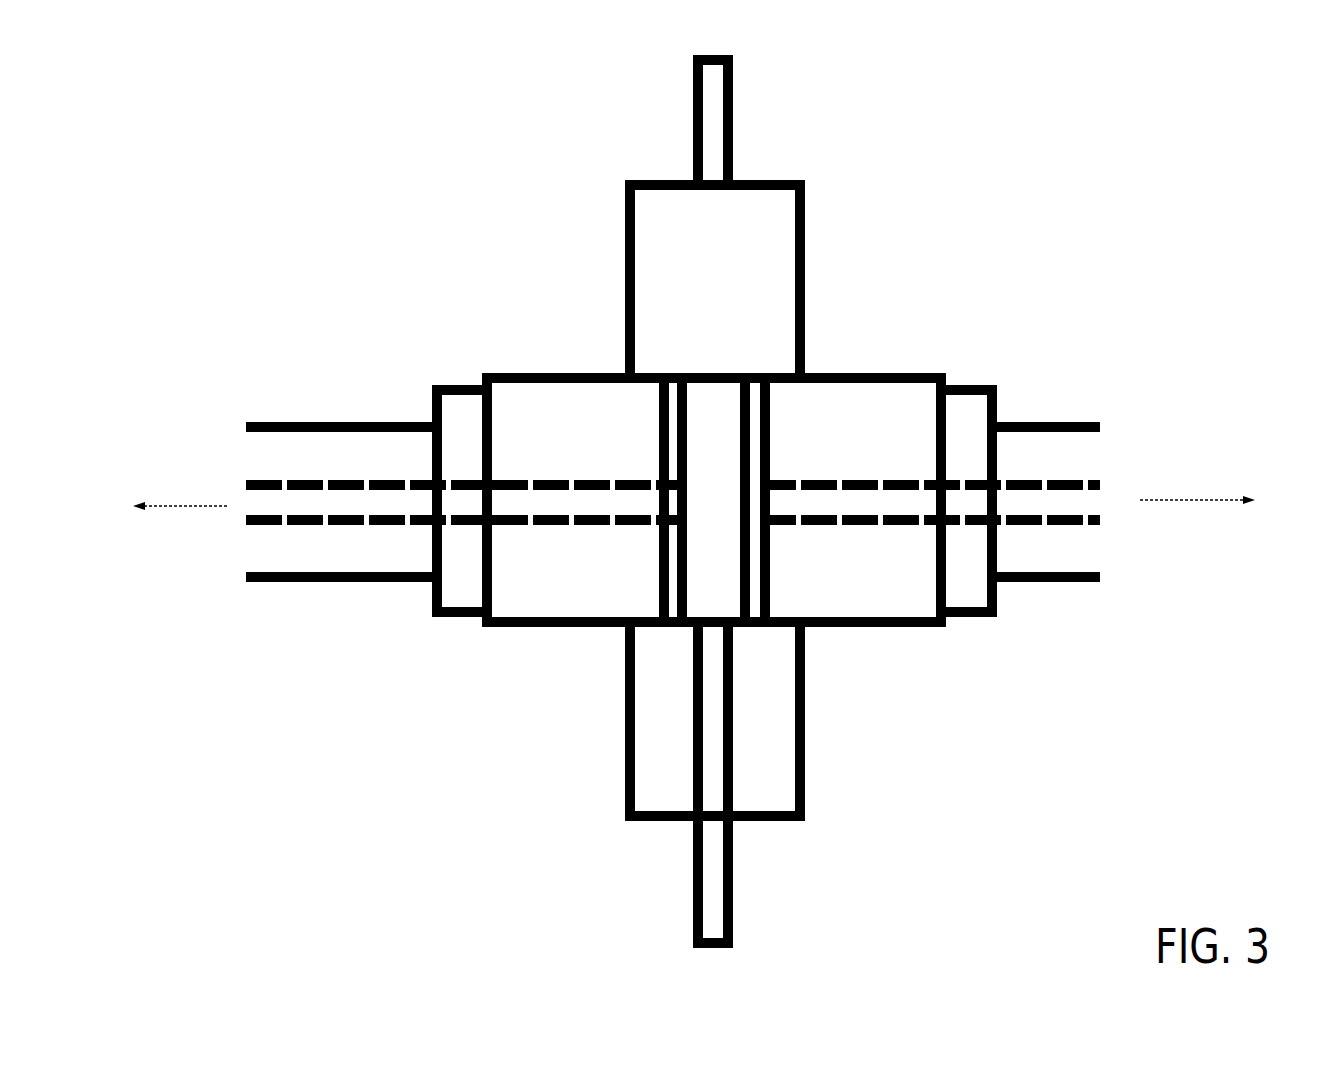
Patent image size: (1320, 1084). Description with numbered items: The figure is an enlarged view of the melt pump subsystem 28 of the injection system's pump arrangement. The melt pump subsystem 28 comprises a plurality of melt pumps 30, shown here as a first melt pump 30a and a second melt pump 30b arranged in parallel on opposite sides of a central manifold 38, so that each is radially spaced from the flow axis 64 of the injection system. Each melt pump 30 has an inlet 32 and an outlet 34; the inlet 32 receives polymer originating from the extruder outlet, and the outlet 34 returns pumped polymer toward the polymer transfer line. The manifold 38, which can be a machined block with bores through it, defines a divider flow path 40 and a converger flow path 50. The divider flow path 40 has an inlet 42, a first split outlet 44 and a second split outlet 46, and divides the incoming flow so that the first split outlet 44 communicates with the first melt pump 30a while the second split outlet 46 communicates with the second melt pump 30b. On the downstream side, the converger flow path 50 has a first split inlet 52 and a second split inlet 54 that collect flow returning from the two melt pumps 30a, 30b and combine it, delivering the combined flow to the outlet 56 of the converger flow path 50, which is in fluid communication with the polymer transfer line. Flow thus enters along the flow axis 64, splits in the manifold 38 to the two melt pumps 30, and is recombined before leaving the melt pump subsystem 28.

The melt pump subsystem 28 is at (350, 92).
The melt pump 30 is at (756, 501).
The first melt pump 30a is at (770, 332).
The second melt pump 30b is at (767, 753).
The inlet 32 is at (807, 367).
The outlet 34 is at (667, 368).
The manifold 38 is at (517, 395).
The inlet 42 is at (960, 502).
The first split inlet 52 is at (673, 395).
The second split inlet 54 is at (655, 610).
The first split outlet 44 is at (767, 398).
The second split outlet 46 is at (770, 617).
The outlet 56 is at (448, 503).
The converger flow path 50 is at (550, 509).
The divider flow path 40 is at (888, 514).
The flow axis 64 is at (1197, 500).